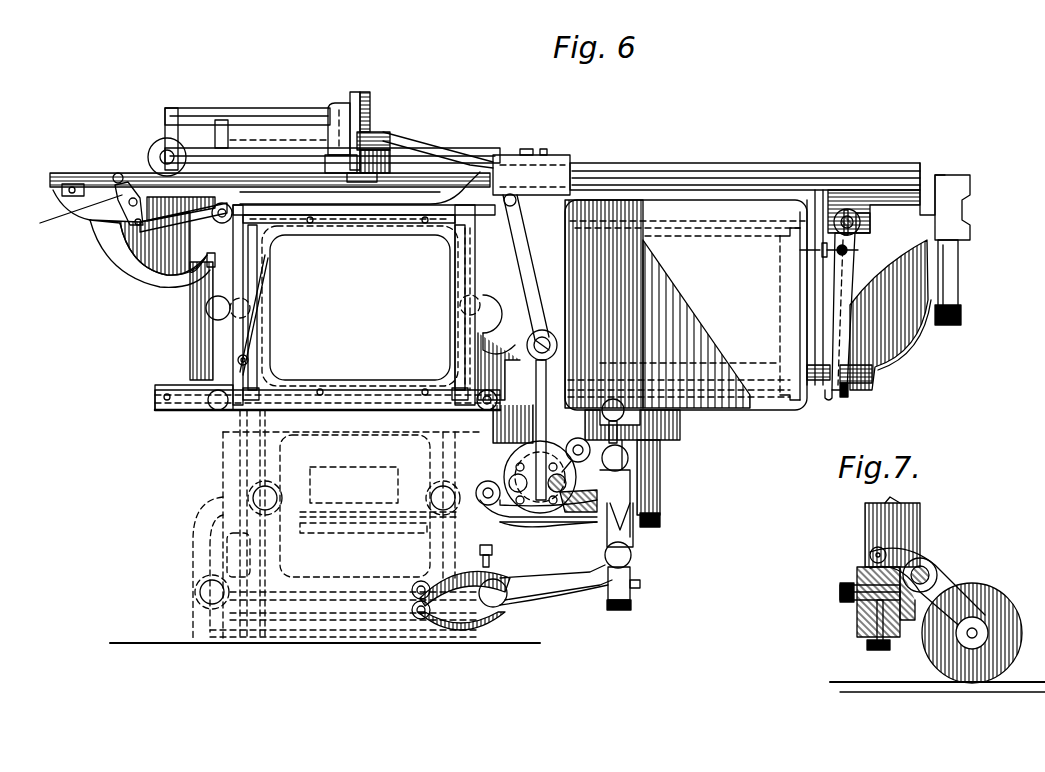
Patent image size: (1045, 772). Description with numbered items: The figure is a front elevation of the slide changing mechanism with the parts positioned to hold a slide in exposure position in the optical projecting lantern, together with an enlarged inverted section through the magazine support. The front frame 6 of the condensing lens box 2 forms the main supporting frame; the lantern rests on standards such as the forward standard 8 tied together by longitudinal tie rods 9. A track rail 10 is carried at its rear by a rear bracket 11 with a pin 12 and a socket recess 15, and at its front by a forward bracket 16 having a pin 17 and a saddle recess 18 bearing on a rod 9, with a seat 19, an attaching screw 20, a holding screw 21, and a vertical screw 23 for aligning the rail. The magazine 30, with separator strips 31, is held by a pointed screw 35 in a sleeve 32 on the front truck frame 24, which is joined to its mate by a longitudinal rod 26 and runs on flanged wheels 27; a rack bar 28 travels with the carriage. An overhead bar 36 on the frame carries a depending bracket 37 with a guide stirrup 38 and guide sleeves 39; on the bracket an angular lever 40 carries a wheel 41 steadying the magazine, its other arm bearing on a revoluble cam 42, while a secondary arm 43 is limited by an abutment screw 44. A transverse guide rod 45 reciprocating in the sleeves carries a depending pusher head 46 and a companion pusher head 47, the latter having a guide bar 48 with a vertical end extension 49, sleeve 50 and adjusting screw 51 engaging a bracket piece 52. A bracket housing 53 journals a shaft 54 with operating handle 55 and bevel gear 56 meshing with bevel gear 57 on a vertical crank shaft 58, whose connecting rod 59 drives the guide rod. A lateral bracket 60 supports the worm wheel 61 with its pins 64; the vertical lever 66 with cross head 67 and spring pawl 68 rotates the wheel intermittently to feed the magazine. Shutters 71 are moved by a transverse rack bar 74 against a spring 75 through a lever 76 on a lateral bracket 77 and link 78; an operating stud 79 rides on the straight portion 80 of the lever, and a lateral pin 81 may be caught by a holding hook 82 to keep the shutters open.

In FIG. 6, the condensing lens box 2 is at (327, 306).
In FIG. 6, the front frame 6 is at (308, 388).
In FIG. 6, the forward standard 8 is at (195, 520).
In FIG. 6, the longitudinal tie rod 9 is at (505, 600).
In FIG. 6, the track rail 10 is at (631, 555).
In FIG. 6, the rear bracket 11 is at (468, 630).
In FIG. 6, the pin or stud 12 is at (418, 618).
In FIG. 6, the socket recess 15 is at (605, 558).
In FIG. 6, the forward bracket 16 is at (565, 590).
In FIG. 6, the pin or stud 17 is at (415, 585).
In FIG. 6, the saddle recess 18 is at (490, 580).
In FIG. 6, the seat 19 is at (632, 570).
In FIG. 6, the attaching screw 20 is at (632, 608).
In FIG. 6, the holding screw 21 is at (642, 586).
In FIG. 6, the vertical screw 23 is at (480, 550).
In FIG. 6, the front truck frame 24 is at (660, 492).
In FIG. 6, the longitudinal bar or rod 26 is at (628, 458).
In FIG. 6, the flanged wheel 27 is at (637, 543).
In FIG. 6, the rack bar 28 is at (580, 462).
In FIG. 6, the magazine 30 is at (686, 305).
In FIG. 7, the magazine 30 is at (962, 693).
In FIG. 6, the separator strip 31 is at (726, 237).
In FIG. 6, the alined sleeve 32 is at (618, 400).
In FIG. 6, the pointed screw 35 is at (625, 410).
In FIG. 6, the overhead transverse bar 36 is at (598, 170).
In FIG. 6, the depending bracket 37 is at (838, 300).
In FIG. 6, the guide stirrup 38 is at (827, 402).
In FIG. 6, the guide sleeve 39 is at (928, 178).
In FIG. 6, the angular lever 40 is at (866, 222).
In FIG. 7, the angular lever 40 is at (932, 560).
In FIG. 6, the wheel 41 is at (818, 180).
In FIG. 7, the wheel 41 is at (992, 600).
In FIG. 6, the revoluble cam 42 is at (862, 250).
In FIG. 7, the revoluble cam 42 is at (868, 570).
In FIG. 7, the secondary arm 43 is at (905, 635).
In FIG. 6, the adjustable abutment screw 44 is at (837, 257).
In FIG. 7, the adjustable abutment screw 44 is at (840, 592).
In FIG. 6, the transverse guide rod 45 is at (150, 175).
In FIG. 6, the depending pusher head 46 is at (190, 316).
In FIG. 6, the companion pusher head 47 is at (460, 298).
In FIG. 6, the transverse guide bar 48 is at (860, 388).
In FIG. 6, the vertical end extension 49 is at (878, 340).
In FIG. 6, the vertical sleeve 50 is at (960, 295).
In FIG. 6, the adjusting screw 51 is at (962, 318).
In FIG. 6, the bracket piece 52 is at (968, 205).
In FIG. 6, the bracket housing 53 is at (392, 160).
In FIG. 6, the shaft 54 is at (278, 148).
In FIG. 6, the operating handle 55 is at (165, 150).
In FIG. 6, the bevel gear 56 is at (333, 103).
In FIG. 6, the bevel gear 57 is at (385, 135).
In FIG. 6, the vertical crank shaft 58 is at (362, 93).
In FIG. 6, the connecting rod 59 is at (238, 113).
In FIG. 6, the lateral bracket 60 is at (518, 330).
In FIG. 6, the worm wheel 61 is at (515, 466).
In FIG. 6, the studs or pins 64 is at (512, 468).
In FIG. 6, the vertical lever 66 is at (530, 245).
In FIG. 6, the cross head 67 is at (548, 522).
In FIG. 6, the spring pawl 68 is at (585, 514).
In FIG. 6, the shutter 71 is at (296, 285).
In FIG. 6, the transverse rack bar 74 is at (320, 222).
In FIG. 6, the spring 75 is at (250, 322).
In FIG. 6, the lever 76 is at (95, 225).
In FIG. 6, the lateral bracket 77 is at (125, 240).
In FIG. 6, the link 78 is at (190, 222).
In FIG. 6, the operating stud 79 is at (117, 175).
In FIG. 6, the straight portion 80 is at (113, 183).
In FIG. 6, the lateral pin 81 is at (70, 214).
In FIG. 6, the holding hook 82 is at (62, 192).